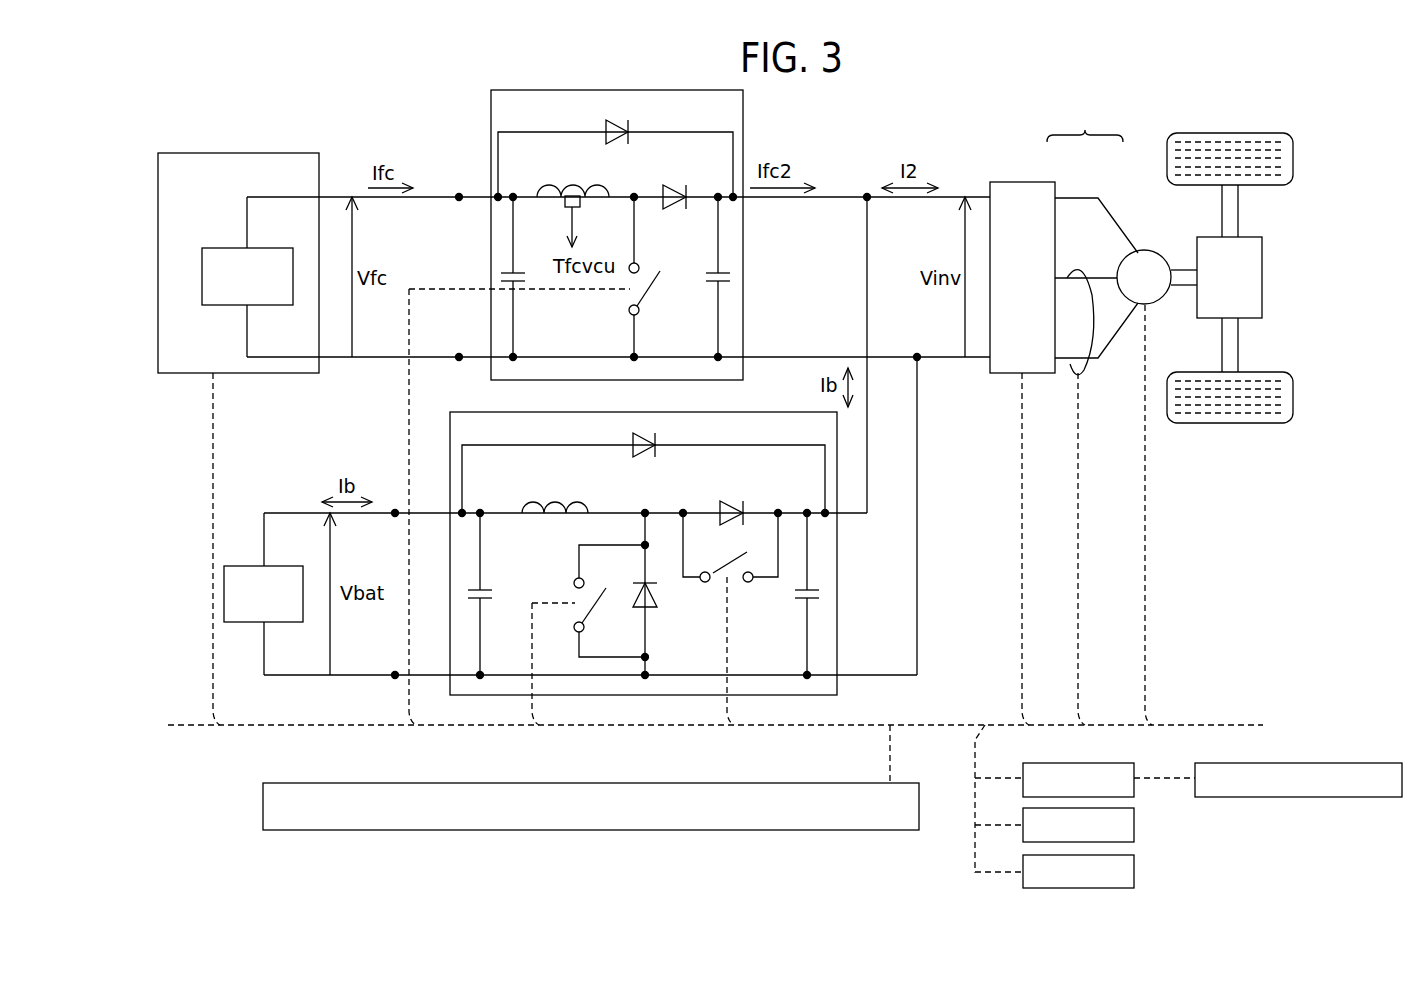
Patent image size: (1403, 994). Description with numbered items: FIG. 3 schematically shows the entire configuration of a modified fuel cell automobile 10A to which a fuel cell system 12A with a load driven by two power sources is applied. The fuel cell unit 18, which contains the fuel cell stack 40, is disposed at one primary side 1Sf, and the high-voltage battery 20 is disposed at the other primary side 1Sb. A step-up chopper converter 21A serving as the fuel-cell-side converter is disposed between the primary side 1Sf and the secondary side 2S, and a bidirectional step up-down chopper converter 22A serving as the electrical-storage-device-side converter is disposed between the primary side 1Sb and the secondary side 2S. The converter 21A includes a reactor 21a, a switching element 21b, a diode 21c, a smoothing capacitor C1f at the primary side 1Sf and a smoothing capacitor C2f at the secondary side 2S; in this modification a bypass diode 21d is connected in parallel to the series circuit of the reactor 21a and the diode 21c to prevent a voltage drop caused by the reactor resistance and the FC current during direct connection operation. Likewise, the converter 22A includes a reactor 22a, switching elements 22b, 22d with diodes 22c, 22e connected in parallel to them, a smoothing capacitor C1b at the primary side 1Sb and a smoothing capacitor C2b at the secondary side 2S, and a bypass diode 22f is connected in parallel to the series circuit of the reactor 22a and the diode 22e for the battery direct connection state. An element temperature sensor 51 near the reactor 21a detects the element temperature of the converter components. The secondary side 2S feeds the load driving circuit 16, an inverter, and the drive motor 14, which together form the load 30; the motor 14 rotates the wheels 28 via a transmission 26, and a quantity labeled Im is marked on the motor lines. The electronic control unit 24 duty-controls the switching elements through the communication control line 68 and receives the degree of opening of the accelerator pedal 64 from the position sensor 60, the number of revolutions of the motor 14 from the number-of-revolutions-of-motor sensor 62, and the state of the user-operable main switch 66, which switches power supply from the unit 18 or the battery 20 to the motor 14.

The fuel cell automobile 10A is at (932, 78).
The fuel cell system 12A is at (870, 178).
The drive motor 14 is at (1144, 250).
The load driving circuit 16 is at (1025, 182).
The fuel cell unit 18 is at (300, 153).
The high-voltage battery 20 is at (278, 566).
The step-up chopper converter 21A is at (743, 270).
The reactor 21a is at (572, 188).
The switching element 21b is at (628, 302).
The diode 21c is at (676, 212).
The bypass diode 21d is at (622, 122).
The bidirectional step up-down chopper converter 22A is at (837, 632).
The reactor 22a is at (556, 500).
The switching element 22b is at (572, 600).
The diode 22c is at (660, 598).
The switching element 22d is at (740, 585).
The diode 22e is at (735, 500).
The bypass diode 22f is at (660, 444).
The electronic control unit 24 is at (878, 830).
The transmission 26 is at (1262, 253).
The wheels 28 is at (1290, 182).
The load 30 is at (1085, 124).
The fuel cell stack 40 is at (228, 248).
The element temperature sensor 51 is at (583, 200).
The position sensor 60 is at (1118, 763).
The number-of-revolutions-of-motor sensor 62 is at (1134, 825).
The accelerator pedal 64 is at (1298, 763).
The main switch 66 is at (1134, 872).
The communication control line 68 is at (272, 725).
The primary side 1Sf is at (459, 203).
The secondary side 2S is at (866, 192).
The primary side 1Sb is at (394, 519).
The smoothing capacitor C1f is at (522, 276).
The smoothing capacitor C2f is at (712, 280).
The smoothing capacitor C1b is at (494, 593).
The smoothing capacitor C2b is at (822, 593).
The motor current sensor Im is at (1082, 372).